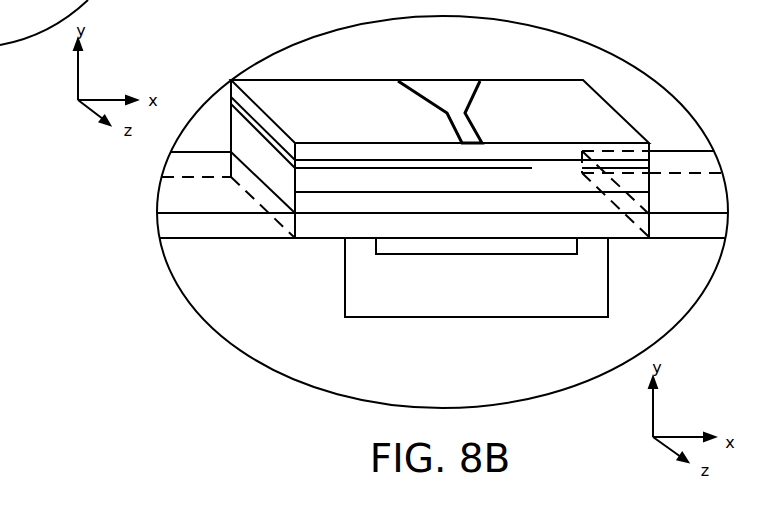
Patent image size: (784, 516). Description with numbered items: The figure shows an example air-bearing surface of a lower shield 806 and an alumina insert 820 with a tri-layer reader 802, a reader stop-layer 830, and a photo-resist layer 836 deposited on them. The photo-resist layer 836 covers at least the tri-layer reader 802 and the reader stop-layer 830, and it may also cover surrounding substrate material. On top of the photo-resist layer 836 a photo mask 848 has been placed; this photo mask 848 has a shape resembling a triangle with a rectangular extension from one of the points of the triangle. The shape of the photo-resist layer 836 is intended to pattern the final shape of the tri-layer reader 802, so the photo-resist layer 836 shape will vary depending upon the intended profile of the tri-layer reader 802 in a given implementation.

The tri-layer reader 802 is at (225, 118).
The photo-resist layer 836 is at (440, 153).
The photo mask 848 is at (440, 112).
The reader stop-layer 830 is at (658, 159).
The lower shield 806 is at (476, 277).
The alumina insert 820 is at (497, 253).